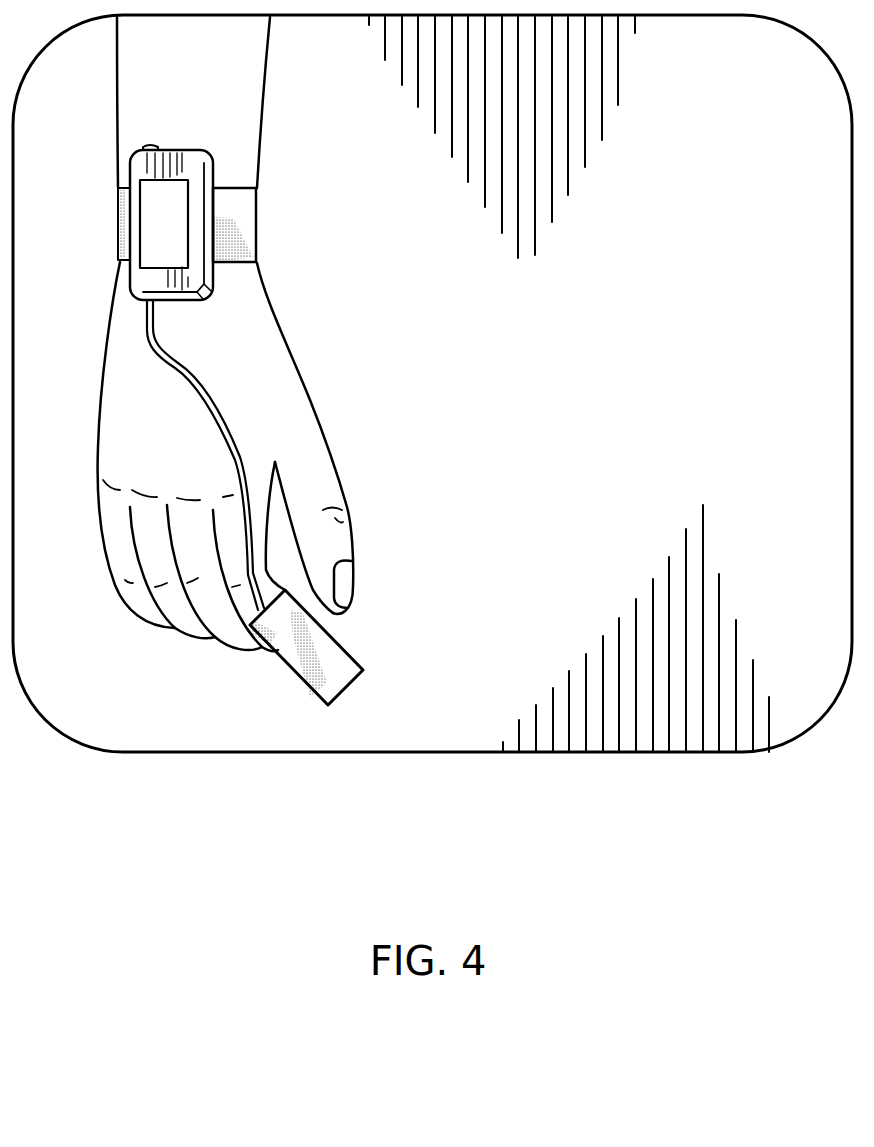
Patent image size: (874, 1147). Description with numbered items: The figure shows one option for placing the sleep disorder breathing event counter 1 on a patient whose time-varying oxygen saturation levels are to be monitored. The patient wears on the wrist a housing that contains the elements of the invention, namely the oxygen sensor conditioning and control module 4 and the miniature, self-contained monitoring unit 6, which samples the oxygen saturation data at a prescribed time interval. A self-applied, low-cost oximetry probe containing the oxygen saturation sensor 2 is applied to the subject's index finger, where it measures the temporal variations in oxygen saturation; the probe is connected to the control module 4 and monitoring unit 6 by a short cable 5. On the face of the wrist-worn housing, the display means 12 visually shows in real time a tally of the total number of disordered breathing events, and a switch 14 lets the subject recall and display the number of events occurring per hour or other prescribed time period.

The sleep disorder breathing event counter 1 is at (412, 325).
The oxygen saturation sensor 2 is at (340, 663).
The oxygen sensor conditioning and control module 4 is at (184, 219).
The short cable 5 is at (218, 408).
The monitoring unit 6 is at (142, 171).
The display means 12 is at (180, 217).
The switch 14 is at (157, 147).